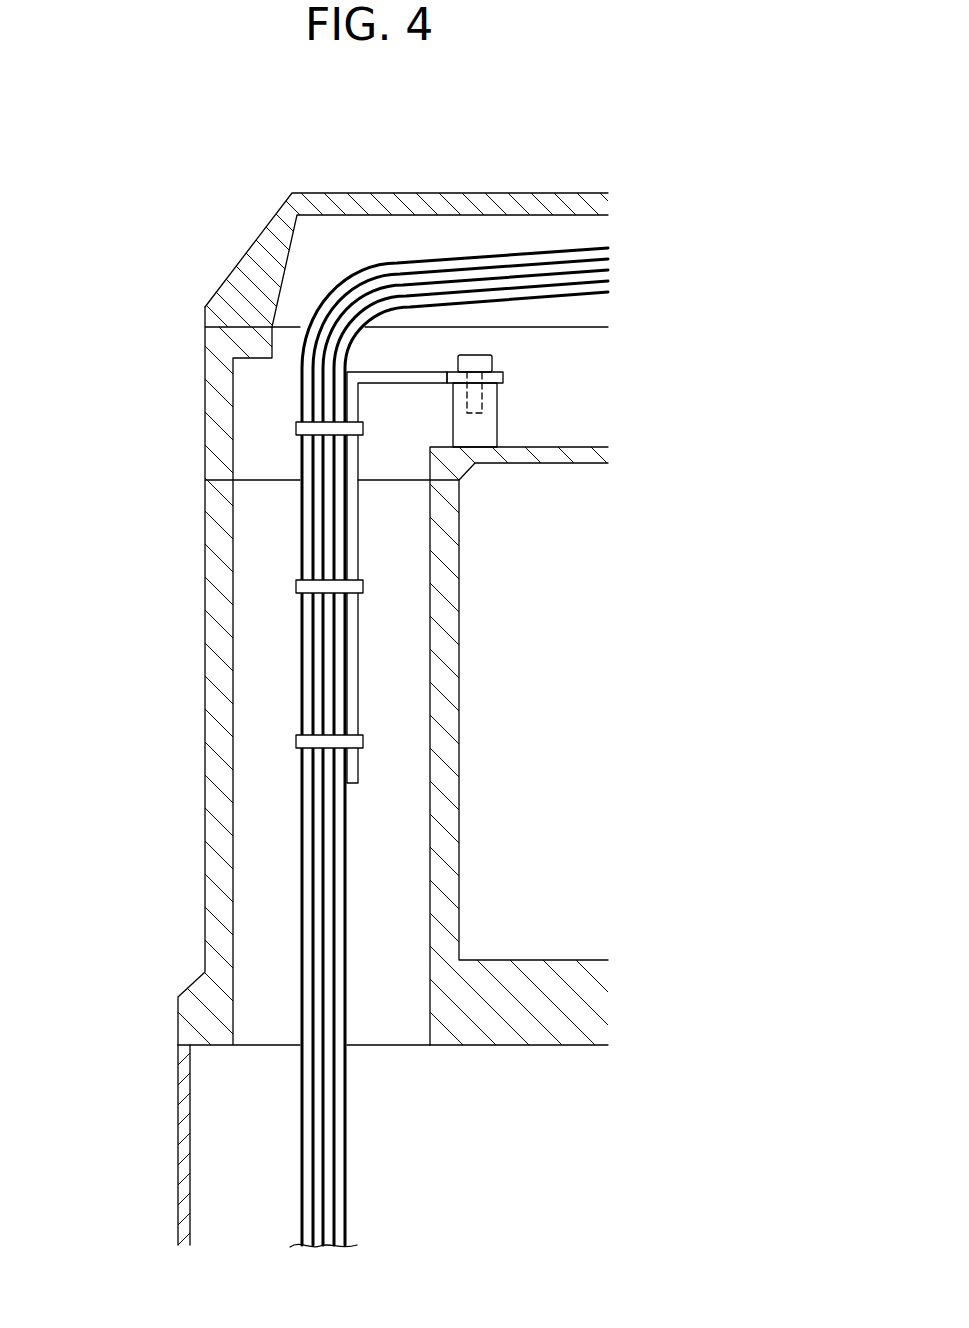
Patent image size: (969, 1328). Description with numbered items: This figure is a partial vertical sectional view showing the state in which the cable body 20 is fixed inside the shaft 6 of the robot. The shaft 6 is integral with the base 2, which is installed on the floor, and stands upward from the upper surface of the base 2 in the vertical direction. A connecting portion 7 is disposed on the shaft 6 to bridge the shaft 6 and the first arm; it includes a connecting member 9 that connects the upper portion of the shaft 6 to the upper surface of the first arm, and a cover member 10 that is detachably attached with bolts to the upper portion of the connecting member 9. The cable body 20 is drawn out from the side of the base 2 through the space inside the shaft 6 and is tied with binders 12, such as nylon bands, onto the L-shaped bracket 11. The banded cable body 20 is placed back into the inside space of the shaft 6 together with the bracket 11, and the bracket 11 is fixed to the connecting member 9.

The base 2 is at (178, 1125).
The shaft 6 is at (484, 619).
The connecting portion 7 is at (592, 371).
The connecting member 9 is at (205, 360).
The cover member 10 is at (248, 252).
The bracket 11 is at (358, 655).
The binders 12 is at (296, 428).
The cable body 20 is at (300, 862).